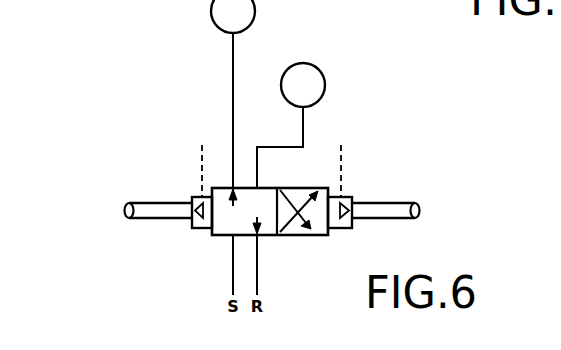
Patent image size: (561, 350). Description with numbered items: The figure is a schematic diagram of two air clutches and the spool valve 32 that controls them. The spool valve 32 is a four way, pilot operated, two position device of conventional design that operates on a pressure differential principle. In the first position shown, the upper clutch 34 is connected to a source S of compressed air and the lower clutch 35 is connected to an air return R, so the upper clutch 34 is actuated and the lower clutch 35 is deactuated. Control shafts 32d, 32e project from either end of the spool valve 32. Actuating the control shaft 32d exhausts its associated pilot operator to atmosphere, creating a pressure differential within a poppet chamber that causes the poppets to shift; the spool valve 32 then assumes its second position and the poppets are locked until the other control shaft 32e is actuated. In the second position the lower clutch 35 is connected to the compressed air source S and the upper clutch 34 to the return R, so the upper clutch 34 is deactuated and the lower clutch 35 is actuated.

The spool valve 32 is at (297, 236).
The control shaft 32d is at (157, 204).
The control shaft 32e is at (372, 203).
The upper clutch 34 is at (233, 94).
The lower clutch 35 is at (291, 125).